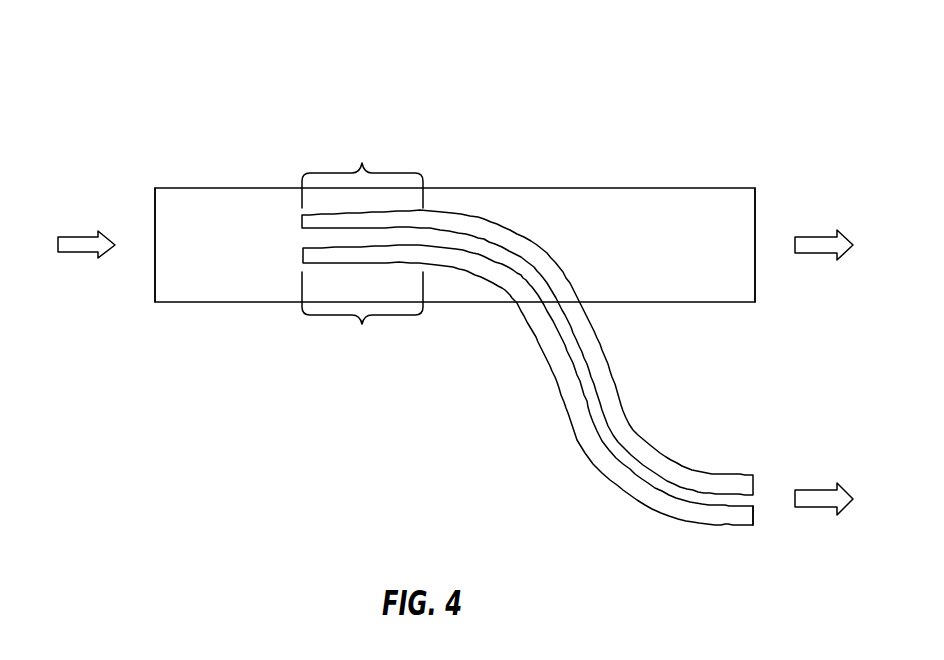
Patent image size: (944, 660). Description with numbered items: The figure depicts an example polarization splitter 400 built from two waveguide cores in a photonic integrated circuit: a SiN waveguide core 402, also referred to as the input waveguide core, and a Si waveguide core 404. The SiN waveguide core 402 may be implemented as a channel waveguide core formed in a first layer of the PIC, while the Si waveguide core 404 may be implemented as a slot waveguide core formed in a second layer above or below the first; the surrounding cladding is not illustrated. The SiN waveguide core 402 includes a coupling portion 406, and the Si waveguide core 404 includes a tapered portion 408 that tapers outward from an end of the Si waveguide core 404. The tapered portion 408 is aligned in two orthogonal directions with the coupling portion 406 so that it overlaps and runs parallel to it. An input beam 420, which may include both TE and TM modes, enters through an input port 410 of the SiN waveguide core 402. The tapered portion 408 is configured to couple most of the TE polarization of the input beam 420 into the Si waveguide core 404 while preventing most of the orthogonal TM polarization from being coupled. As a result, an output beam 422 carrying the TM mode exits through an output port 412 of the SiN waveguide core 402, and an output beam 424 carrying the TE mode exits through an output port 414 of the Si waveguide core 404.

The polarization splitter 400 is at (789, 100).
The SiN waveguide core 402 is at (208, 302).
The Si waveguide core 404 is at (479, 233).
The coupling portion 406 is at (362, 173).
The tapered portion 408 is at (362, 313).
The input port 410 is at (155, 259).
The output port 412 is at (757, 200).
The output port 414 is at (753, 498).
The input beam 420 is at (82, 252).
The output beam 422 is at (820, 253).
The output beam 424 is at (823, 507).